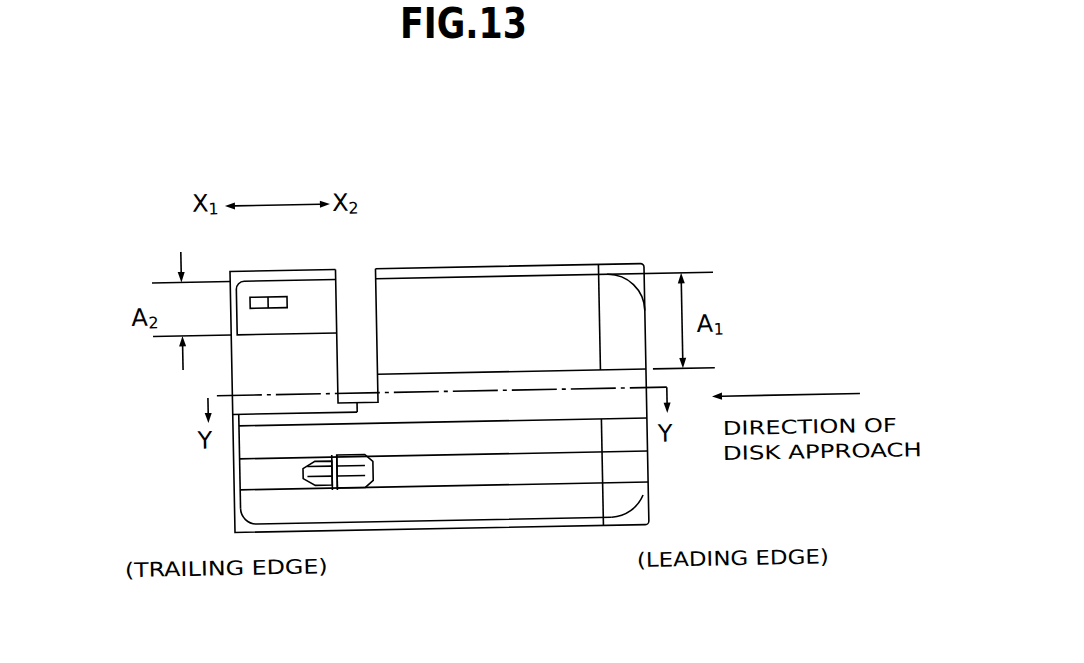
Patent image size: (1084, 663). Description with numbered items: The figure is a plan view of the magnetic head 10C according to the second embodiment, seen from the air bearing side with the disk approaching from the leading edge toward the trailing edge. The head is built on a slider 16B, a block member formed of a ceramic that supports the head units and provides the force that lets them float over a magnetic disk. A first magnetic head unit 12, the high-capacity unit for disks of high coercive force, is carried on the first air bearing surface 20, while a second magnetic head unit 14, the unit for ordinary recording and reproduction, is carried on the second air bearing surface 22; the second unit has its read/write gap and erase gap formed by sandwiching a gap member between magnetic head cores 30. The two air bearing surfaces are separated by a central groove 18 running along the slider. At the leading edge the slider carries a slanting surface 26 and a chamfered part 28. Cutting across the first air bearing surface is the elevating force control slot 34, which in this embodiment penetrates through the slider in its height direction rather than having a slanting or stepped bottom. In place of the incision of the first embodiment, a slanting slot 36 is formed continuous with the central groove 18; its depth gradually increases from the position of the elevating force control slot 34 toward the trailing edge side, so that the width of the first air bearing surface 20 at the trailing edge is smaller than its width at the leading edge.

The magnetic head 10C is at (630, 146).
The first magnetic head unit 12 is at (264, 285).
The second magnetic head unit 14 is at (345, 498).
The slider 16B is at (560, 257).
The central groove 18 is at (445, 402).
The first air bearing surface 20 is at (457, 283).
The second air bearing surface 22 is at (475, 496).
The slanting surface 26 is at (613, 265).
The chamfered part 28 is at (382, 266).
The magnetic head core 30 is at (576, 466).
The elevating force control slot 34 is at (352, 281).
The slanting slot 36 is at (248, 371).